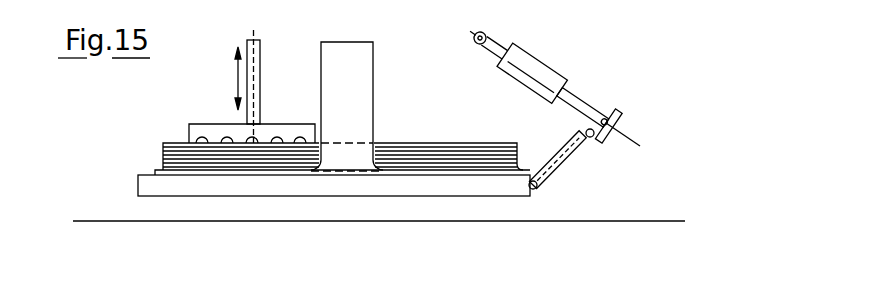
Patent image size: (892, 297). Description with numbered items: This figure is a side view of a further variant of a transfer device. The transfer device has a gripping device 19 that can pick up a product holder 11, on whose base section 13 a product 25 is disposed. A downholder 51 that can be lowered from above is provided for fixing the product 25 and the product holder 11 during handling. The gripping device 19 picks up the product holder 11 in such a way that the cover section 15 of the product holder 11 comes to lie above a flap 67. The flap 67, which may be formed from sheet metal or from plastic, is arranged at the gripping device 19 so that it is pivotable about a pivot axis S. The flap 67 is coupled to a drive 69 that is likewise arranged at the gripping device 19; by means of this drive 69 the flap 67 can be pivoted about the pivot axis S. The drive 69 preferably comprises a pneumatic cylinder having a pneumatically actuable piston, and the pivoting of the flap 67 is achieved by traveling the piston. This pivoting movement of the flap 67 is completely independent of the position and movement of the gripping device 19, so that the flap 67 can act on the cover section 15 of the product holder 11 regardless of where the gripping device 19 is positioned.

The product holder 11 is at (135, 162).
The base section 13 is at (263, 173).
The cover section 15 is at (573, 133).
The gripping device 19 is at (363, 107).
The product 25 is at (447, 140).
The downholder 51 is at (260, 75).
The flap 67 is at (570, 153).
The drive 69 is at (545, 63).
The pivot axis S is at (537, 188).